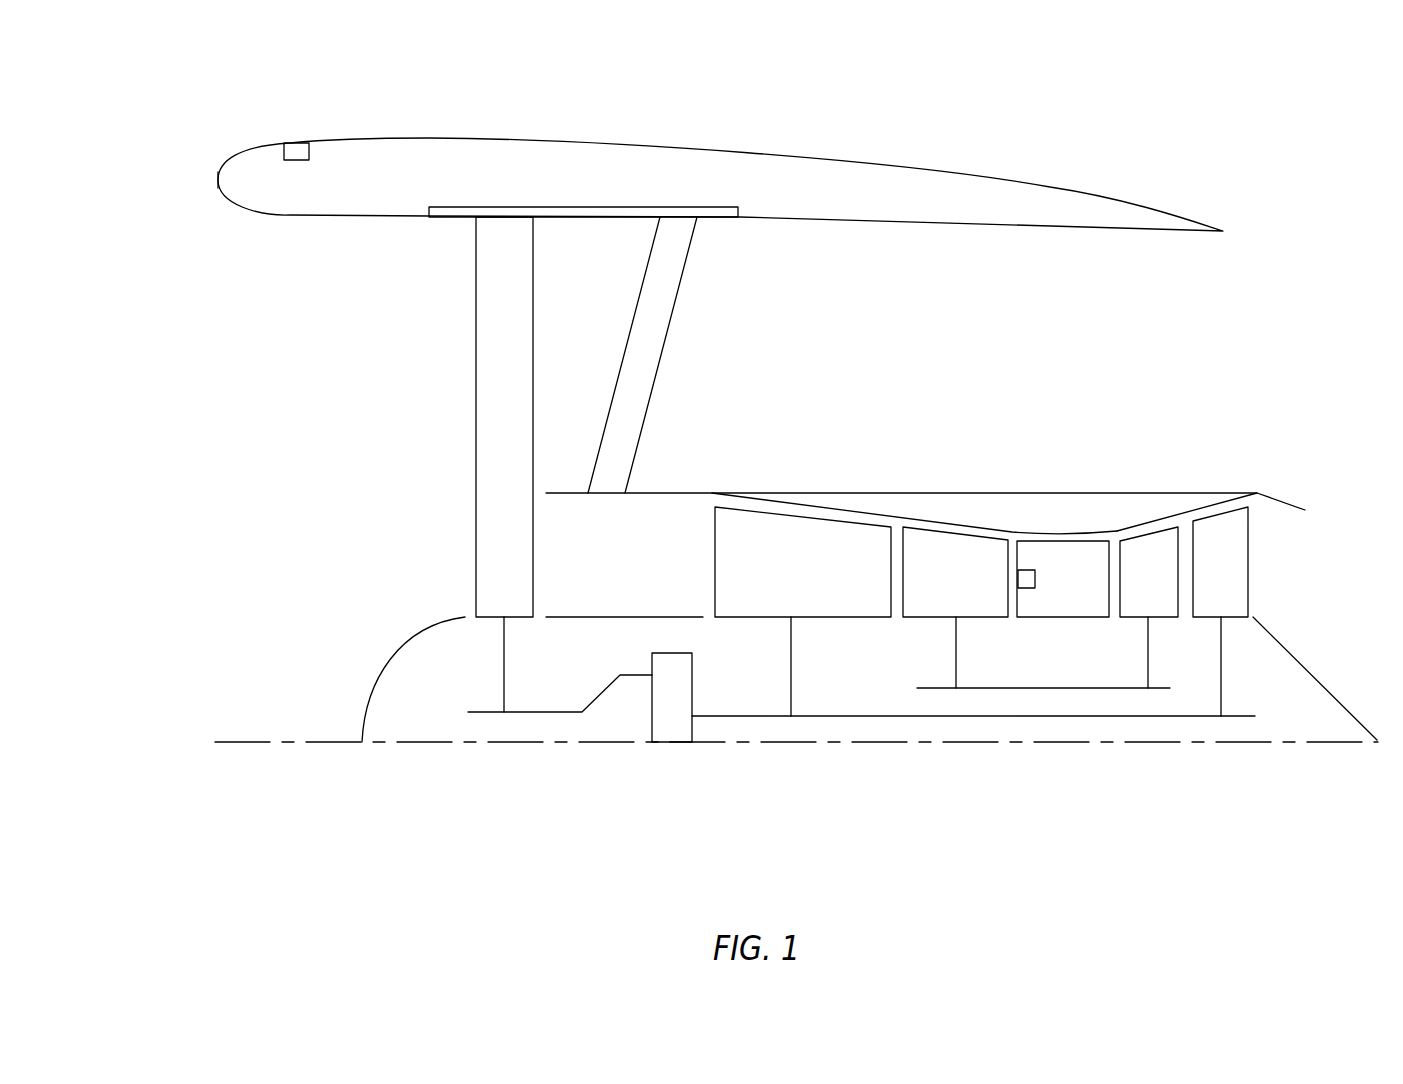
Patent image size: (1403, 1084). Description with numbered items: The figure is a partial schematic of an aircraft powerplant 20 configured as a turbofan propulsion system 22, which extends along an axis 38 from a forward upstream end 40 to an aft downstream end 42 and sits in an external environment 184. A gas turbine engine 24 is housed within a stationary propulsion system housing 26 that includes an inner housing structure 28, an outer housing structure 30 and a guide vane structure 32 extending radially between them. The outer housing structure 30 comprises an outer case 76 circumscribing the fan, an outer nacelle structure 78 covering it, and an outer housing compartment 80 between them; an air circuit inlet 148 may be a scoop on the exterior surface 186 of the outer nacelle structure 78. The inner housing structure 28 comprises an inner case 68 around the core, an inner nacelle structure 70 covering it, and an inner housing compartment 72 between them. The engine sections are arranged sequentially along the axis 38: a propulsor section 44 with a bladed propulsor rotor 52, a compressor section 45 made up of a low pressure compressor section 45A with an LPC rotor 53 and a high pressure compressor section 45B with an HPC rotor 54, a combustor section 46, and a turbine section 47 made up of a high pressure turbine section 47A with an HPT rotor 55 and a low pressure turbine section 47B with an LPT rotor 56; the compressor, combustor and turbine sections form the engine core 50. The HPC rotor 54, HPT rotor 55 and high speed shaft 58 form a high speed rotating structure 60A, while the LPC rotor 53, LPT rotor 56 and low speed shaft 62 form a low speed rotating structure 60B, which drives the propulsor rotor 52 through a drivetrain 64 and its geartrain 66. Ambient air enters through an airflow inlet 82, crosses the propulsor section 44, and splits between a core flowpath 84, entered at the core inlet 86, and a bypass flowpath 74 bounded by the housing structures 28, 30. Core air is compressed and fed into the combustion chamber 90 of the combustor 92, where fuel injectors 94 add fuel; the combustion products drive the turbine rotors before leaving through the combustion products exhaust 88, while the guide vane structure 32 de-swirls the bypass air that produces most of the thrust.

The powerplant 20 is at (668, 149).
The propulsion system 22 is at (190, 130).
The environment 184 is at (143, 158).
The upstream end 40 is at (217, 182).
The propulsion system housing 26 is at (377, 118).
The outer housing structure 30 is at (432, 118).
The outer nacelle structure 78 is at (502, 97).
The exterior surface 186 is at (510, 138).
The air circuit inlet 148 is at (297, 162).
The outer case 76 is at (440, 207).
The outer housing compartment 80 is at (547, 192).
The propulsor rotor 52 is at (518, 476).
The airflow inlet 86 is at (548, 548).
The guide vane structure 32 is at (691, 349).
The bypass flowpath 74 is at (855, 351).
The gas turbine engine 24 is at (252, 287).
The airflow inlet 82 is at (215, 384).
The inner housing structure 28 is at (738, 480).
The core flowpath 84 is at (637, 593).
The inner case 68 is at (800, 507).
The inner nacelle structure 70 is at (845, 493).
The inner housing compartment 72 is at (1133, 509).
The low pressure compressor rotor 53 is at (805, 595).
The high pressure compressor rotor 54 is at (968, 595).
The combustion chamber 90 is at (1085, 595).
The fuel injector 94 is at (1027, 590).
The high pressure turbine rotor 55 is at (1162, 595).
The low pressure turbine rotor 56 is at (1235, 595).
The combustor 92 is at (1063, 617).
The combustion products exhaust 88 is at (1305, 572).
The downstream end 42 is at (1380, 740).
The low speed shaft 62 is at (843, 716).
The high speed shaft 58 is at (980, 688).
The drivetrain 64 is at (661, 770).
The geartrain 66 is at (684, 712).
The axis 38 is at (228, 750).
The propulsor section 44 is at (545, 798).
The low pressure compressor section 45A is at (870, 788).
The high pressure compressor section 45B is at (1008, 788).
The compressor section 45 is at (1008, 858).
The combustor section 46 is at (1109, 788).
The high pressure turbine section 47A is at (1178, 797).
The low pressure turbine section 47B is at (1248, 797).
The turbine section 47 is at (1250, 858).
The core 50 is at (1052, 889).
The high speed rotating structure 60A is at (1179, 675).
The low speed rotating structure 60B is at (1273, 705).